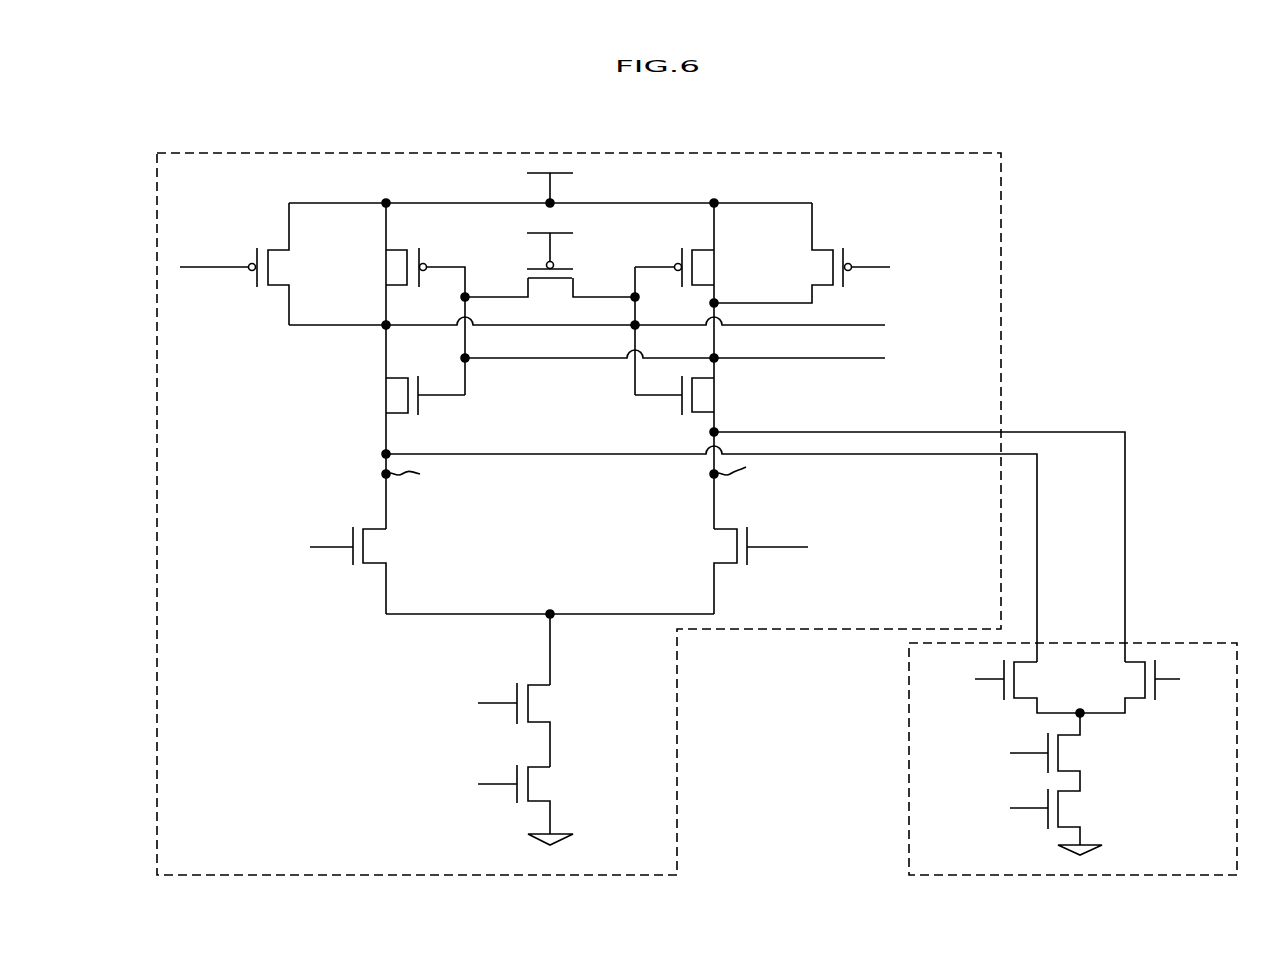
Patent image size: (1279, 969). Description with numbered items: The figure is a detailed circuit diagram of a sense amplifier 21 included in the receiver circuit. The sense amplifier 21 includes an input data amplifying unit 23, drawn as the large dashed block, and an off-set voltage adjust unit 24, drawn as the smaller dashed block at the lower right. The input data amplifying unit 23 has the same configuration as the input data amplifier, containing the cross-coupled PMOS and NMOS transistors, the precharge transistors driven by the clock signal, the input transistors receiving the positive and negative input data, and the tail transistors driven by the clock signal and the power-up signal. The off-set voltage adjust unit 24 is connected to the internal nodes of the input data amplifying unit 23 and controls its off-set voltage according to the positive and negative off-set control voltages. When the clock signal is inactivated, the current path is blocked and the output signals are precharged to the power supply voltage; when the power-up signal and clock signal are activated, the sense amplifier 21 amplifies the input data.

The sense amplifier 21 is at (1163, 129).
The input data amplifying unit 23 is at (1001, 341).
The off-set voltage adjust unit 24 is at (1160, 645).